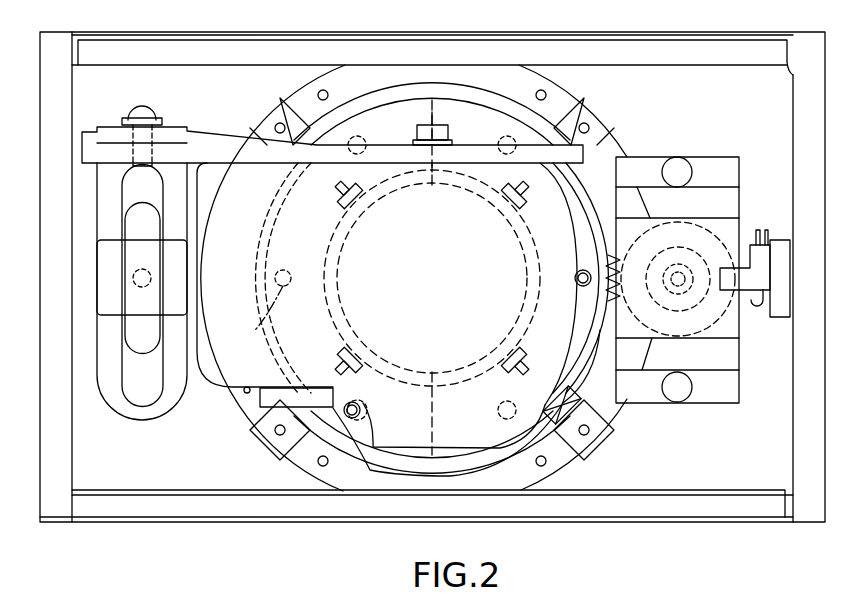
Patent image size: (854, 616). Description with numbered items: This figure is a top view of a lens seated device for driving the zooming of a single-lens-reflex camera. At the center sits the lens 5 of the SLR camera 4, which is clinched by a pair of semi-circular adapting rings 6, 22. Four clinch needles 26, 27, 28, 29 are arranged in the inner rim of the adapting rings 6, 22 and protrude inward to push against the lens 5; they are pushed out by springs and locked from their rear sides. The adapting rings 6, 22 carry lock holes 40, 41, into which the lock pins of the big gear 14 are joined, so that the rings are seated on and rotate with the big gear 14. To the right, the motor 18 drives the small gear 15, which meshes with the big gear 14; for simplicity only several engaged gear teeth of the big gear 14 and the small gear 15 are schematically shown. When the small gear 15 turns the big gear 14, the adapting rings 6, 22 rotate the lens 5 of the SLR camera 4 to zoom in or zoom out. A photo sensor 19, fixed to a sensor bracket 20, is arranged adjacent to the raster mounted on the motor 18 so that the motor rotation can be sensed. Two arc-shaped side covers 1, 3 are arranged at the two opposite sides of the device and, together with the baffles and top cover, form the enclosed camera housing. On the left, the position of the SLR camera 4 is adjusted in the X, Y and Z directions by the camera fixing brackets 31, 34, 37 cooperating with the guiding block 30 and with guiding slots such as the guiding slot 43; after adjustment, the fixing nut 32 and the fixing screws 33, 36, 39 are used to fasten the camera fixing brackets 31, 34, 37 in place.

The arc-shaped side cover 1 is at (60, 47).
The arc-shaped side cover 3 is at (812, 50).
The SLR camera 4 is at (213, 360).
The lens 5 is at (345, 235).
The adapting ring 6 is at (353, 410).
The big gear 14 is at (345, 374).
The small gear 15 is at (720, 315).
The motor 18 is at (735, 232).
The photo sensor 19 is at (760, 268).
The sensor bracket 20 is at (790, 300).
The adapting ring 22 is at (498, 445).
The clinch needle 26 is at (360, 416).
The clinch needle 27 is at (345, 193).
The clinch needle 28 is at (533, 410).
The clinch needle 29 is at (518, 192).
The guiding block 30 is at (128, 330).
The camera fixing bracket 31 is at (123, 407).
The fixing nut 32 is at (112, 260).
The fixing screw 33 is at (128, 283).
The camera fixing bracket 34 is at (110, 133).
The fixing screw 36 is at (128, 112).
The camera fixing bracket 37 is at (495, 150).
The fixing screw 39 is at (438, 125).
The lock hole 40 is at (255, 330).
The lock hole 41 is at (587, 286).
The guiding slot 43 is at (130, 372).